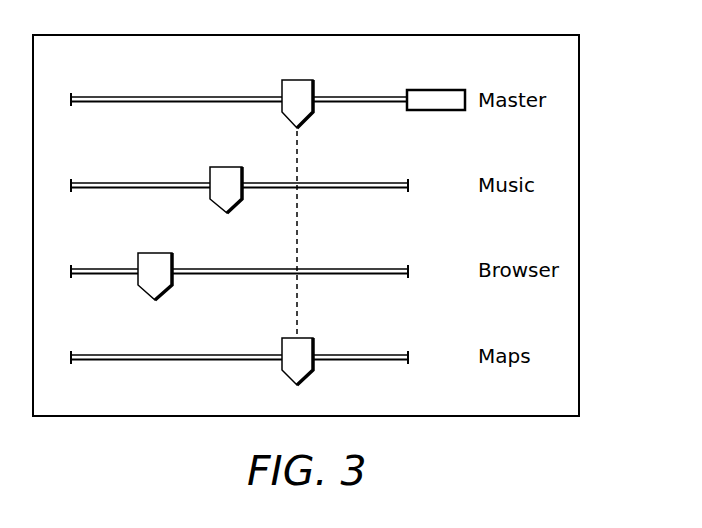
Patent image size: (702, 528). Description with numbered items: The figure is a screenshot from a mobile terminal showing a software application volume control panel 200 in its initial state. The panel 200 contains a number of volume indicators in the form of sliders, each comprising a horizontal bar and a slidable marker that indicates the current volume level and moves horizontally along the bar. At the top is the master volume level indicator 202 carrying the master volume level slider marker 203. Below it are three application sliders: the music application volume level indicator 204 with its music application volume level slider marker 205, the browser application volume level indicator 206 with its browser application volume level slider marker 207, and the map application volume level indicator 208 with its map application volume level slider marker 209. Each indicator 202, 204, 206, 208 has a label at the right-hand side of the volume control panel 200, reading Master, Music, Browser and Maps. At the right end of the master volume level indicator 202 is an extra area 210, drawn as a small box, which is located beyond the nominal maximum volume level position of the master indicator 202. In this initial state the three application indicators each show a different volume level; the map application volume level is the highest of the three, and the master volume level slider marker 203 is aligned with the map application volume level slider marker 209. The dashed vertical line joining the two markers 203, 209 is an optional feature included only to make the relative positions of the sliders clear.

The software application volume control panel 200 is at (531, 430).
The master volume level indicator 202 is at (96, 97).
The master volume level slider marker 203 is at (310, 86).
The music application volume level indicator 204 is at (96, 183).
The music application volume level slider marker 205 is at (212, 172).
The browser application volume level indicator 206 is at (96, 269).
The browser application volume level slider marker 207 is at (168, 259).
The map application volume level indicator 208 is at (96, 355).
The map application volume level slider marker 209 is at (310, 344).
The extra area 210 is at (434, 95).